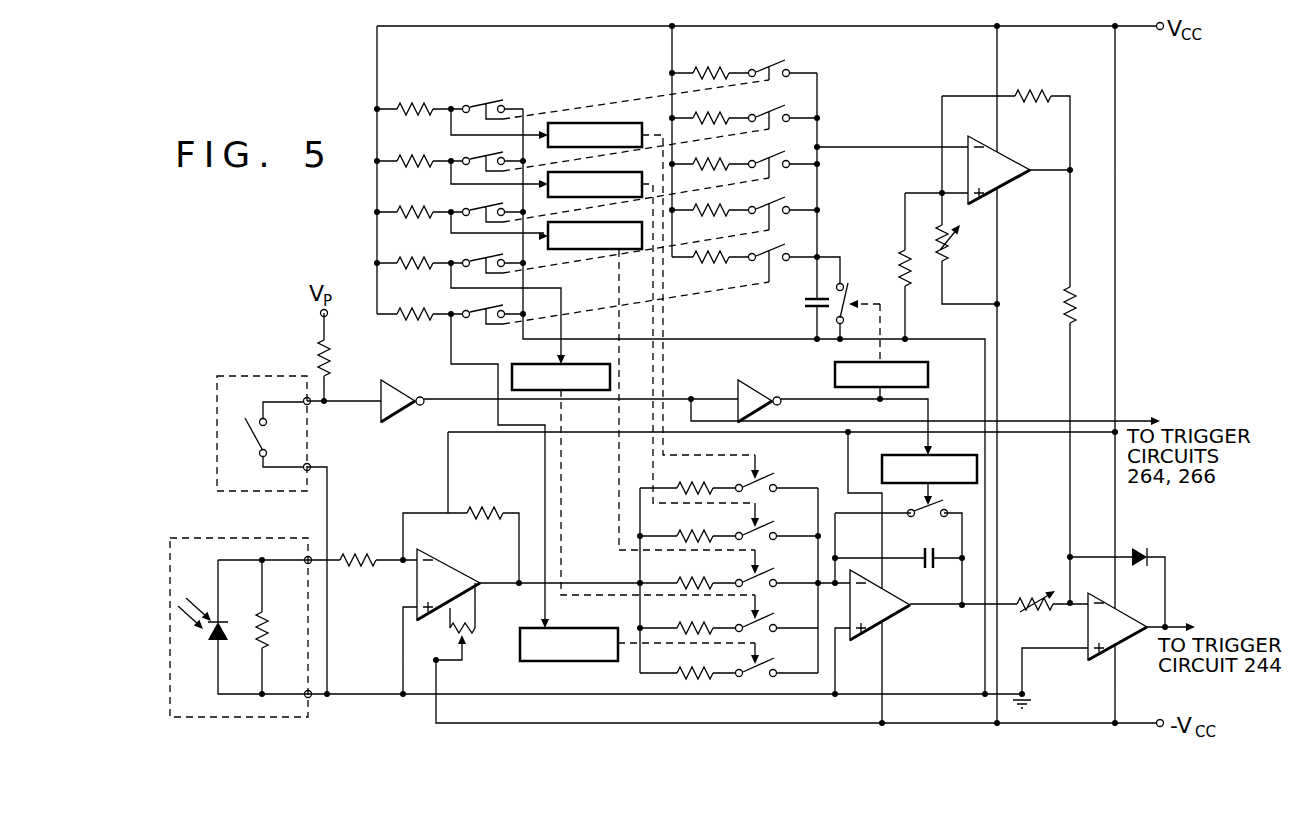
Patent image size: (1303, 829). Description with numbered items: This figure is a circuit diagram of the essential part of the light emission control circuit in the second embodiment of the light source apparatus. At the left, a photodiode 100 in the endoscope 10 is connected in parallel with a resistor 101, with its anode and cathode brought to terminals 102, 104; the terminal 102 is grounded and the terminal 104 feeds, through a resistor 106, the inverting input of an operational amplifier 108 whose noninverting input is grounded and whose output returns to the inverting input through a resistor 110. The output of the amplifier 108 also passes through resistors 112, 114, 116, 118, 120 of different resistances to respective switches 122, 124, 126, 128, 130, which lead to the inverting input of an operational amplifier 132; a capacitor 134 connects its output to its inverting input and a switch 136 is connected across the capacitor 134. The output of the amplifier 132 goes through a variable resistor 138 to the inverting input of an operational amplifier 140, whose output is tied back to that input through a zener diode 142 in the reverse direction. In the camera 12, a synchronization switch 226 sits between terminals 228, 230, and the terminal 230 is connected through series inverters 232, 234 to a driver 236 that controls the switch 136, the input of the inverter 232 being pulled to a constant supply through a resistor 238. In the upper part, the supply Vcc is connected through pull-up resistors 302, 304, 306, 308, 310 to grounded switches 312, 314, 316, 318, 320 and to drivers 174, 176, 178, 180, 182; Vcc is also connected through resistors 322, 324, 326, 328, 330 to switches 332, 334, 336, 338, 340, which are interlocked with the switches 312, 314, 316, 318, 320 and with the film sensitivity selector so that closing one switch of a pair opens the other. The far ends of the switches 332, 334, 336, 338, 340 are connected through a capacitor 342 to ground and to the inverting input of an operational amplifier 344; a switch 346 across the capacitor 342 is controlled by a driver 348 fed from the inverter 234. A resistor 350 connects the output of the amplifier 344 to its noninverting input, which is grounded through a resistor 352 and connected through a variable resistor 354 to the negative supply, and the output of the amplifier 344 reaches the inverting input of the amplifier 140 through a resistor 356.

The endoscope 10 is at (196, 538).
The photodiode 100 is at (213, 635).
The resistor 101 is at (270, 626).
The terminal 102 is at (312, 700).
The terminal 104 is at (305, 565).
The camera 12 is at (243, 376).
The synchronization switch 226 is at (243, 450).
The terminal 228 is at (311, 467).
The terminal 230 is at (310, 405).
The inverter 232 is at (392, 418).
The inverter 234 is at (762, 387).
The driver 236 is at (978, 466).
The resistor 238 is at (329, 352).
The resistor 106 is at (358, 552).
The operational amplifier 108 is at (462, 582).
The resistor 110 is at (478, 505).
The resistor 112 is at (697, 478).
The resistor 114 is at (699, 525).
The resistor 116 is at (699, 571).
The resistor 118 is at (698, 618).
The resistor 120 is at (698, 663).
The switch 122 is at (776, 484).
The switch 124 is at (774, 531).
The switch 126 is at (776, 576).
The switch 128 is at (776, 625).
The switch 130 is at (776, 670).
The operational amplifier 132 is at (885, 618).
The capacitor 134 is at (924, 568).
The switch 136 is at (930, 517).
The variable resistor 138 is at (1033, 595).
The operational amplifier 140 is at (1112, 655).
The zener diode 142 is at (1143, 550).
The driver 174 is at (572, 121).
The driver 176 is at (622, 180).
The driver 178 is at (590, 250).
The driver 180 is at (580, 361).
The driver 182 is at (546, 663).
The pull-up resistor 302 is at (415, 98).
The pull-up resistor 304 is at (415, 150).
The pull-up resistor 306 is at (415, 201).
The pull-up resistor 308 is at (415, 252).
The pull-up resistor 310 is at (415, 303).
The switch 312 is at (486, 104).
The switch 314 is at (475, 158).
The switch 316 is at (480, 196).
The switch 318 is at (480, 247).
The switch 320 is at (480, 300).
The resistor 322 is at (712, 63).
The resistor 324 is at (714, 107).
The resistor 326 is at (717, 154).
The resistor 328 is at (720, 201).
The resistor 330 is at (703, 240).
The switch 332 is at (790, 66).
The switch 334 is at (795, 101).
The switch 336 is at (795, 146).
The switch 338 is at (795, 193).
The switch 340 is at (795, 240).
The capacitor 342 is at (806, 306).
The operational amplifier 344 is at (1006, 160).
The switch 346 is at (845, 296).
The driver 348 is at (930, 378).
The resistor 350 is at (1037, 86).
The resistor 352 is at (906, 290).
The variable resistor 354 is at (948, 255).
The resistor 356 is at (1066, 300).